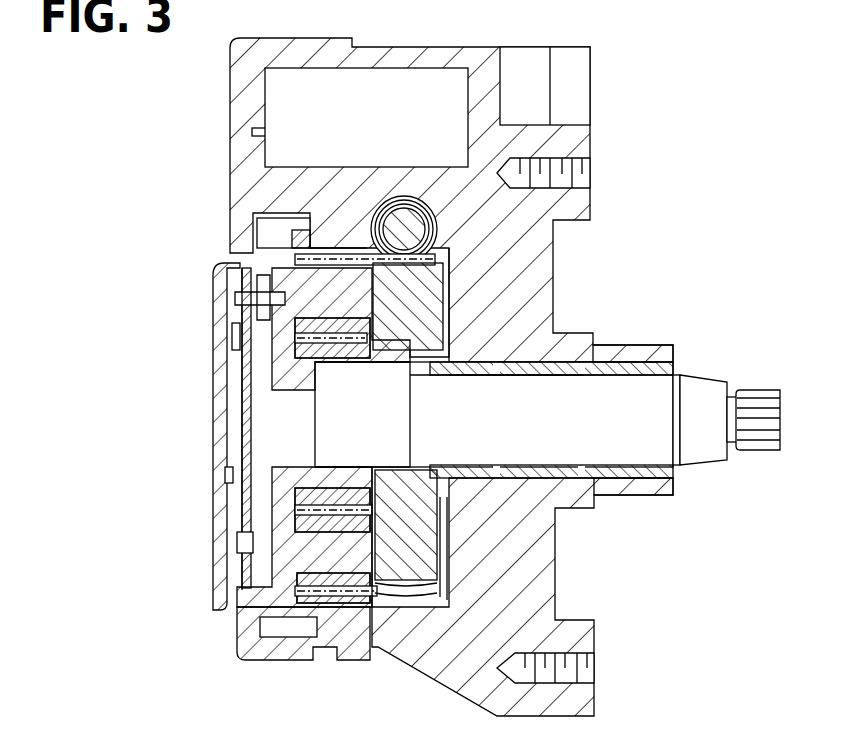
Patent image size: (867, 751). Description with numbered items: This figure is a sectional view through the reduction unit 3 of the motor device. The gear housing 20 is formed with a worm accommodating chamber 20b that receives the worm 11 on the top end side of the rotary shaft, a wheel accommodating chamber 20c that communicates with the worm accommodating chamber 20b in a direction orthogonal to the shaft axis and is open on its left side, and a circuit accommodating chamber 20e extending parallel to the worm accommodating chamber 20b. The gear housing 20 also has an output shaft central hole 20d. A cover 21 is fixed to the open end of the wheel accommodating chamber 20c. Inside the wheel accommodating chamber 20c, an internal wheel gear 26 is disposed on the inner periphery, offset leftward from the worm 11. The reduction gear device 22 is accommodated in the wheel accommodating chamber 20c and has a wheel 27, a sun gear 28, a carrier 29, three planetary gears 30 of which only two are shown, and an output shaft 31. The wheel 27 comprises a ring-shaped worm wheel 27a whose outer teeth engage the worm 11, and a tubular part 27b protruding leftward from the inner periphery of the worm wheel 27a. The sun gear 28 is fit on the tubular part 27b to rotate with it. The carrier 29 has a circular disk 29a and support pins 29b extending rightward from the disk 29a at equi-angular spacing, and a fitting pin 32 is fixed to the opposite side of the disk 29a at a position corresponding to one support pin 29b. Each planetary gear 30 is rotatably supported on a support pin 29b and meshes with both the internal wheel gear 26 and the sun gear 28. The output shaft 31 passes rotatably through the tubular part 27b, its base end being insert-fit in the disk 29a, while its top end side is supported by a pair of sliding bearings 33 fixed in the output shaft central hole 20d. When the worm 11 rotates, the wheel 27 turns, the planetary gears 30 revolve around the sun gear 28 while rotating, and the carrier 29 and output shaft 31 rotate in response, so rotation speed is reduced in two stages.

The reduction unit 3 is at (606, 219).
The worm 11 is at (374, 250).
The gear housing 20 is at (545, 268).
The worm accommodating chamber 20b is at (410, 197).
The wheel accommodating chamber 20c is at (435, 590).
The output shaft central hole 20d is at (635, 362).
The circuit accommodating chamber 20e is at (390, 76).
The cover 21 is at (215, 407).
The reduction gear device 22 is at (445, 541).
The internal wheel gear 26 is at (345, 603).
The wheel 27 is at (520, 428).
The worm wheel 27a is at (455, 340).
The tubular part 27b is at (345, 373).
The sun gear 28 is at (324, 358).
The carrier 29 is at (137, 588).
The disk 29a is at (330, 553).
The support pin 29b is at (240, 608).
The planetary gear 30 is at (340, 253).
The output shaft 31 is at (522, 388).
The fitting pin 32 is at (283, 236).
The sliding bearing 33 is at (492, 466).